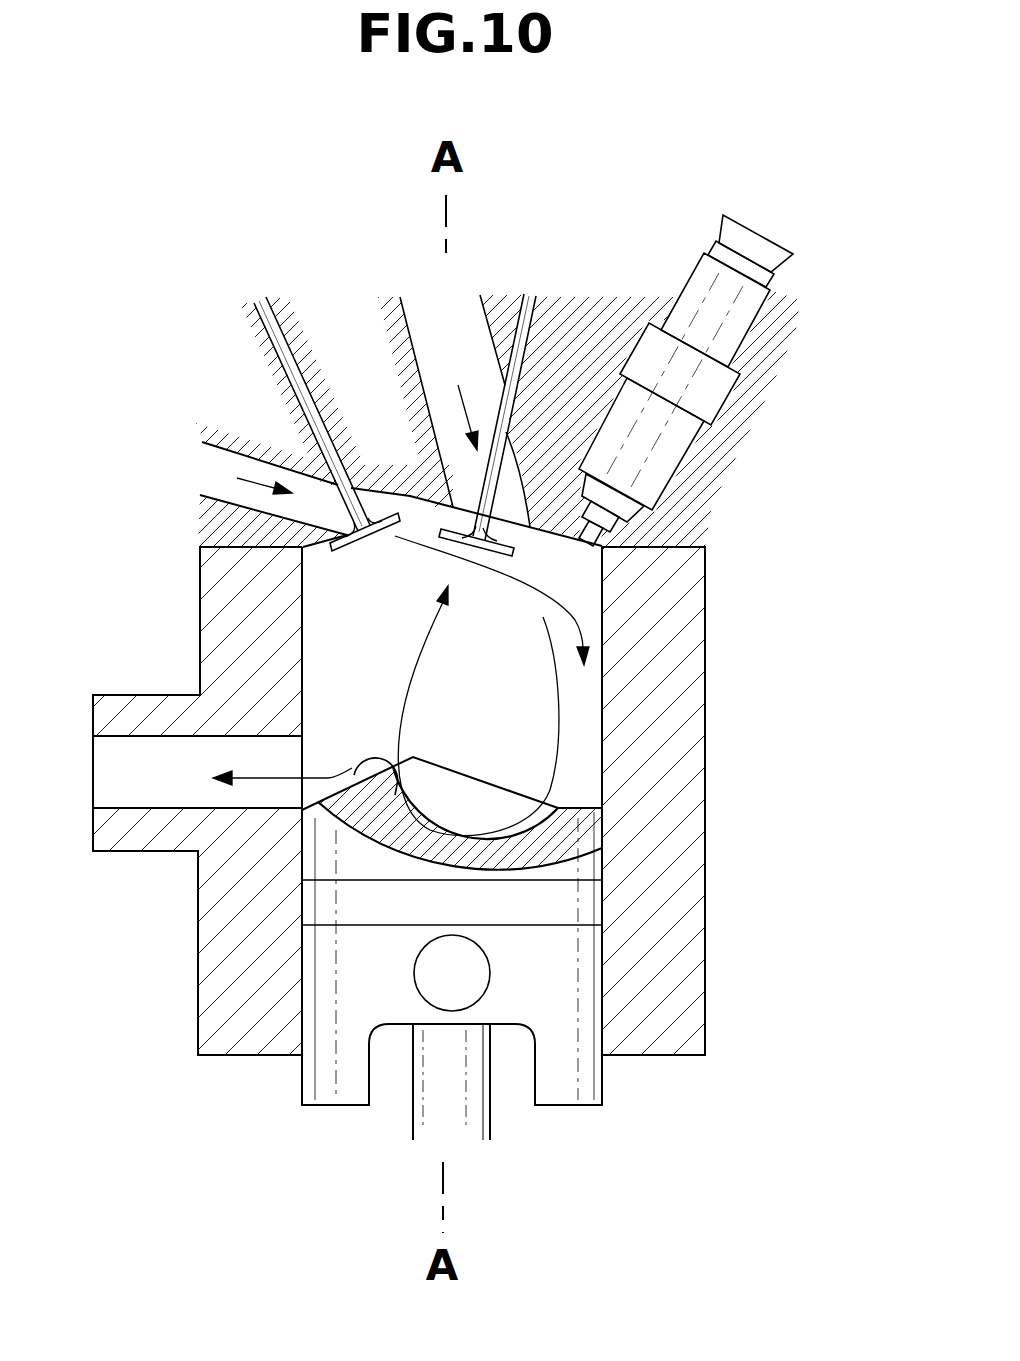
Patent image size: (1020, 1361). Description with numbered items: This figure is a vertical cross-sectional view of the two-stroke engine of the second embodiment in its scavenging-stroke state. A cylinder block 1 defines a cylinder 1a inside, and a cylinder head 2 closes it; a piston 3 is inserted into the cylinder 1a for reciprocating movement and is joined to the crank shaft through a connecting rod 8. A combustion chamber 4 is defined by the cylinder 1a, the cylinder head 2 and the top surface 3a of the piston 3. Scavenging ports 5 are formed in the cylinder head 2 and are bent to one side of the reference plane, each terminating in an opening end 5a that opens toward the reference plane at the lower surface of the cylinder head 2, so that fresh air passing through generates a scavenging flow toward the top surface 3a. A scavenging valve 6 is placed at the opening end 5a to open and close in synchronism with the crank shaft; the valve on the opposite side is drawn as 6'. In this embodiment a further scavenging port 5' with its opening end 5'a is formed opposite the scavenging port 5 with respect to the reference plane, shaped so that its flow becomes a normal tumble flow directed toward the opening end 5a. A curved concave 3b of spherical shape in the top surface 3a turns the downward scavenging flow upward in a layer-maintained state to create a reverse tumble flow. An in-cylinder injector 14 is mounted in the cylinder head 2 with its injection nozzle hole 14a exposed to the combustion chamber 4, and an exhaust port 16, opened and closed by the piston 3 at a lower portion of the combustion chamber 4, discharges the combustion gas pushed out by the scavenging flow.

The cylinder block 1 is at (707, 880).
The cylinder 1a is at (603, 690).
The cylinder head 2 is at (522, 300).
The piston 3 is at (557, 1105).
The top surface of the piston 3a is at (357, 764).
The curved concave 3b is at (560, 827).
The combustion chamber 4 is at (318, 648).
The scavenging port 5 is at (415, 386).
The opening end 5a is at (465, 498).
The scavenging port 5' is at (199, 452).
The opening end 5'a is at (246, 513).
The scavenging valve 6 is at (541, 394).
The second exhaust valve 6' is at (270, 417).
The connecting rod 8 is at (412, 1115).
The in-cylinder injector 14 is at (705, 388).
The injection nozzle hole 14a is at (590, 550).
The exhaust port 16 is at (180, 778).